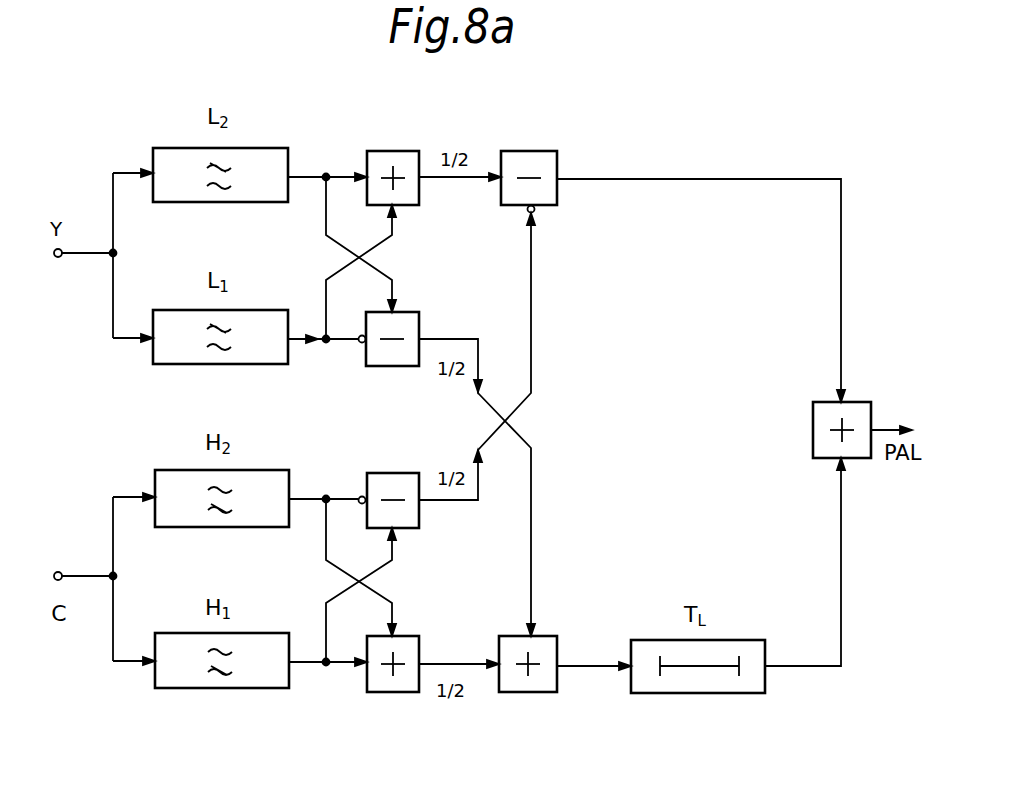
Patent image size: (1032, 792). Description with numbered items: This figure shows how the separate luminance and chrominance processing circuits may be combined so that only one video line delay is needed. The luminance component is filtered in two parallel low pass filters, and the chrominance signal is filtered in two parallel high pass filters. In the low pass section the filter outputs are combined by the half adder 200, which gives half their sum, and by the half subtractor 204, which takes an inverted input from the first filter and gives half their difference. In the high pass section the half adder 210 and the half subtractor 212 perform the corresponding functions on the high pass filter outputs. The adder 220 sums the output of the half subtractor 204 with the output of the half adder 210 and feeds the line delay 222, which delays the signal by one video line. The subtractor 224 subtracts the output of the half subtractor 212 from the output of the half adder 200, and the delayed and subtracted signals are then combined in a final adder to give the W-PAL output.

The half adder 200 is at (388, 152).
The half subtractor 204 is at (407, 325).
The half adder 210 is at (410, 648).
The half subtractor 212 is at (385, 483).
The adder 220 is at (550, 648).
The line delay 222 is at (545, 162).
The subtractor 224 is at (813, 402).